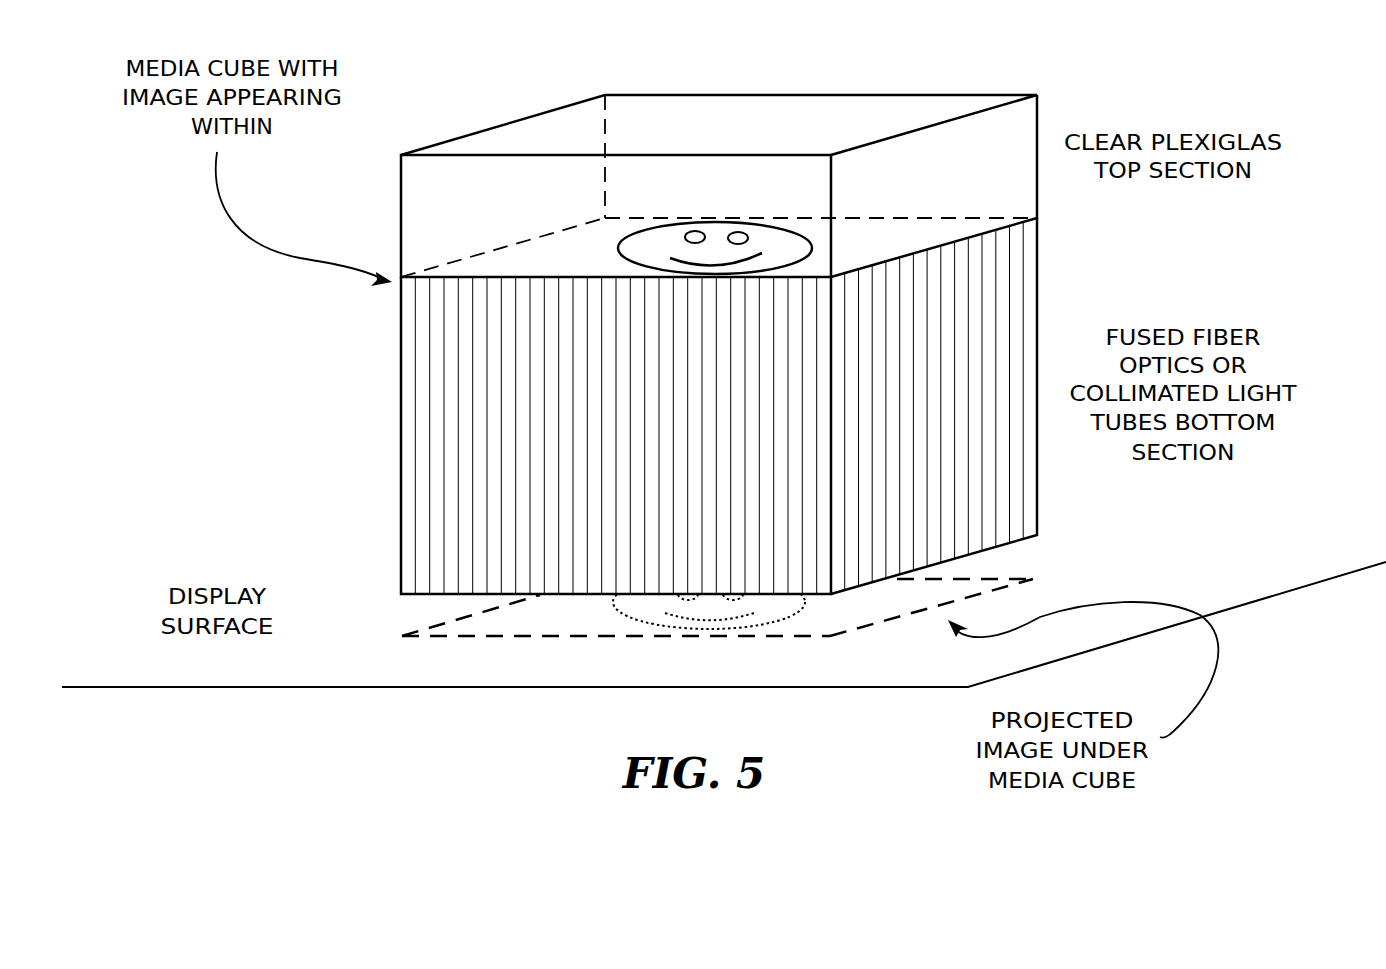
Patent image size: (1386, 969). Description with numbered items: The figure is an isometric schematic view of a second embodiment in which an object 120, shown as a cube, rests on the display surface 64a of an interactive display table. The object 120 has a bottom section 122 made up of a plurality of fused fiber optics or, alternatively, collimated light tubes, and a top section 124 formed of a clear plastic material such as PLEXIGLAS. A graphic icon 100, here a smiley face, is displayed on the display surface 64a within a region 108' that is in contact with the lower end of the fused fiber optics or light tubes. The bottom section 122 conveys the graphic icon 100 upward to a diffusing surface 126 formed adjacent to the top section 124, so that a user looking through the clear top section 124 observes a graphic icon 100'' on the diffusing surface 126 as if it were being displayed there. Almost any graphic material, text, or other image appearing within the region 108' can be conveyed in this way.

The display surface 64a is at (485, 687).
The region 108' is at (793, 580).
The graphic icon 100 is at (690, 626).
The object 120 is at (653, 307).
The bottom section 122 is at (395, 455).
The top section 124 is at (394, 211).
The diffusing surface 126 is at (562, 248).
The graphic icon 100'' is at (810, 147).